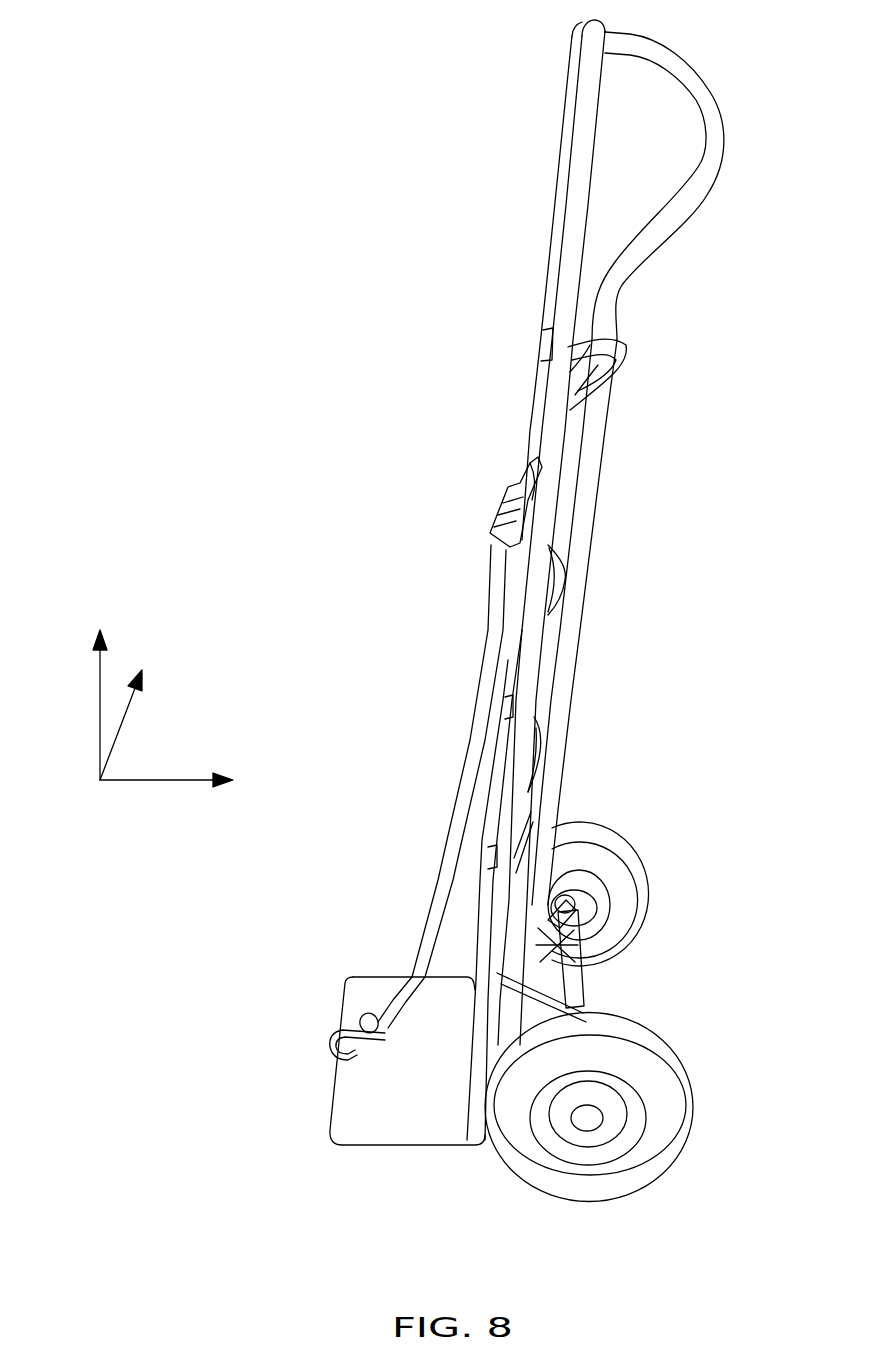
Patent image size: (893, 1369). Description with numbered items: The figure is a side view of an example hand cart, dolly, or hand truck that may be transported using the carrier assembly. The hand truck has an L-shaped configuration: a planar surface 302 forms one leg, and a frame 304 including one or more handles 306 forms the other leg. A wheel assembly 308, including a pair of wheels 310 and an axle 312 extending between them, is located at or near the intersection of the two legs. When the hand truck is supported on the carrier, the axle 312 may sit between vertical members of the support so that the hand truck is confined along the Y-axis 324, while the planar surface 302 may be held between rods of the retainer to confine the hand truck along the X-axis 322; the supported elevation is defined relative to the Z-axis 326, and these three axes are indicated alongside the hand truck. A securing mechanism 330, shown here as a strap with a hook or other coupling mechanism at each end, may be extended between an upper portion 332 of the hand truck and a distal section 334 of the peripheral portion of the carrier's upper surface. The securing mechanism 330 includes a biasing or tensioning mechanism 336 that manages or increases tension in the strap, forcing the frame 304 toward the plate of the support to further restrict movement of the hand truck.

The planar surface 302 is at (350, 1100).
The frame 304 is at (558, 368).
The handle 306 is at (680, 70).
The wheel assembly 308 is at (636, 1212).
The wheel 310 is at (575, 831).
The axle 312 is at (578, 1003).
The X-axis 322 is at (144, 725).
The Y-axis 324 is at (166, 794).
The Z-axis 326 is at (74, 705).
The securing mechanism 330 is at (455, 845).
The upper portion 332 is at (468, 158).
The distal section 334 is at (302, 1062).
The tensioning mechanism 336 is at (496, 525).